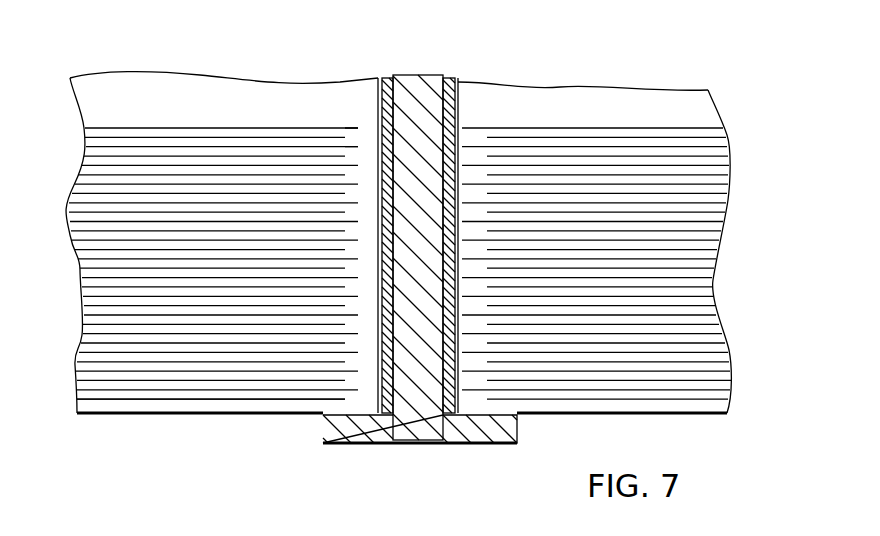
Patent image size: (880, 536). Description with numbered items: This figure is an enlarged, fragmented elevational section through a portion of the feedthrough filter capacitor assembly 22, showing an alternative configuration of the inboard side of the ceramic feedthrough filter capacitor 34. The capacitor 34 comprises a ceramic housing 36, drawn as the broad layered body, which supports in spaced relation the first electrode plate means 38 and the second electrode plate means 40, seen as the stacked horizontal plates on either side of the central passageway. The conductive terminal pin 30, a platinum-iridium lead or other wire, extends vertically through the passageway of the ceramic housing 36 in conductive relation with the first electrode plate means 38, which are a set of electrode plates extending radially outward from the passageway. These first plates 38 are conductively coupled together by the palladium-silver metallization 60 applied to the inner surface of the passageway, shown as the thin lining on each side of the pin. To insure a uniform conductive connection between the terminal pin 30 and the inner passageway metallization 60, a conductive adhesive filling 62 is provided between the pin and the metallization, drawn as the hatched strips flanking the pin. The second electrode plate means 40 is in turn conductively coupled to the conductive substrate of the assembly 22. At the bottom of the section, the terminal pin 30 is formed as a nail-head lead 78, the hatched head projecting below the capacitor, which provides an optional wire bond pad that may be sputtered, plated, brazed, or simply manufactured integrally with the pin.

The feedthrough filter capacitor assembly 22 is at (556, 67).
The conductive terminal pin 30 is at (412, 75).
The ceramic feedthrough filter capacitor 34 is at (175, 418).
The ceramic housing 36 is at (262, 413).
The first electrode plate means 38 is at (352, 150).
The second electrode plate means 40 is at (722, 153).
The palladium-silver metallization 60 is at (426, 78).
The conductive adhesive filling 62 is at (458, 97).
The nail-head lead 78 is at (478, 443).